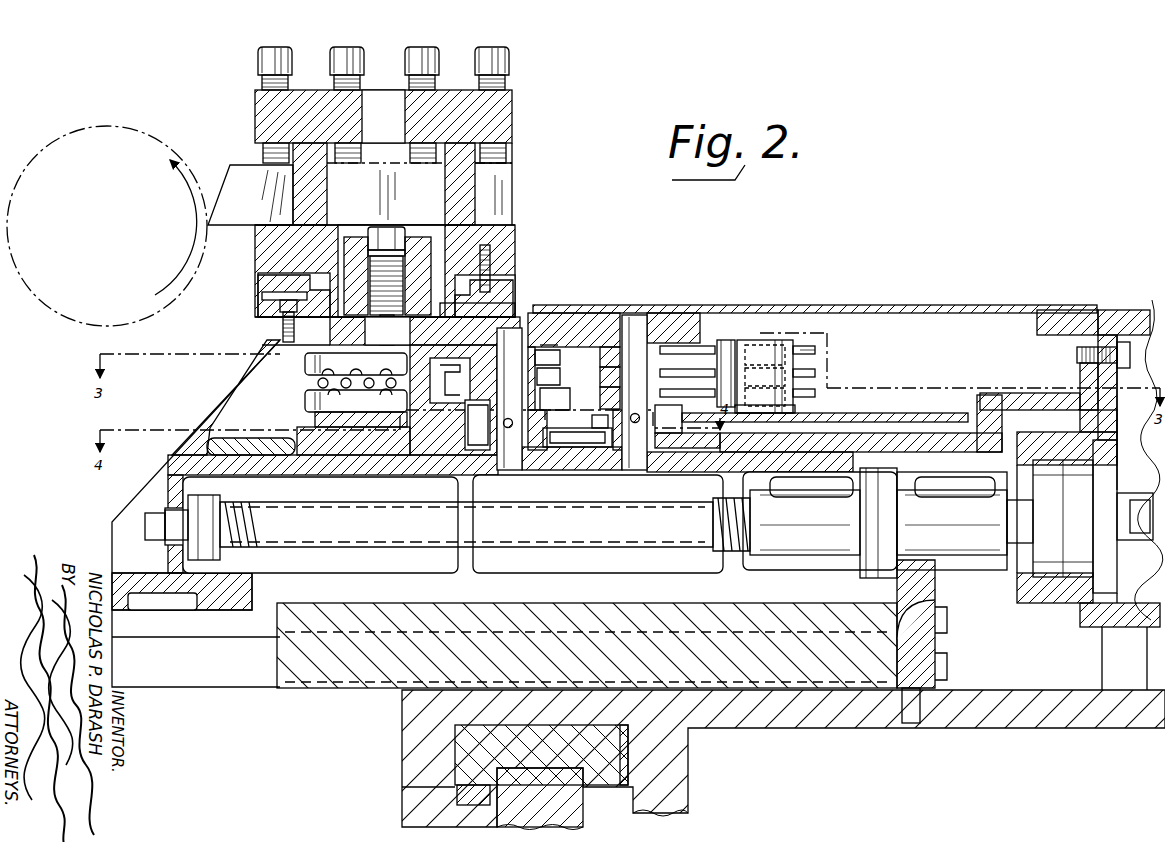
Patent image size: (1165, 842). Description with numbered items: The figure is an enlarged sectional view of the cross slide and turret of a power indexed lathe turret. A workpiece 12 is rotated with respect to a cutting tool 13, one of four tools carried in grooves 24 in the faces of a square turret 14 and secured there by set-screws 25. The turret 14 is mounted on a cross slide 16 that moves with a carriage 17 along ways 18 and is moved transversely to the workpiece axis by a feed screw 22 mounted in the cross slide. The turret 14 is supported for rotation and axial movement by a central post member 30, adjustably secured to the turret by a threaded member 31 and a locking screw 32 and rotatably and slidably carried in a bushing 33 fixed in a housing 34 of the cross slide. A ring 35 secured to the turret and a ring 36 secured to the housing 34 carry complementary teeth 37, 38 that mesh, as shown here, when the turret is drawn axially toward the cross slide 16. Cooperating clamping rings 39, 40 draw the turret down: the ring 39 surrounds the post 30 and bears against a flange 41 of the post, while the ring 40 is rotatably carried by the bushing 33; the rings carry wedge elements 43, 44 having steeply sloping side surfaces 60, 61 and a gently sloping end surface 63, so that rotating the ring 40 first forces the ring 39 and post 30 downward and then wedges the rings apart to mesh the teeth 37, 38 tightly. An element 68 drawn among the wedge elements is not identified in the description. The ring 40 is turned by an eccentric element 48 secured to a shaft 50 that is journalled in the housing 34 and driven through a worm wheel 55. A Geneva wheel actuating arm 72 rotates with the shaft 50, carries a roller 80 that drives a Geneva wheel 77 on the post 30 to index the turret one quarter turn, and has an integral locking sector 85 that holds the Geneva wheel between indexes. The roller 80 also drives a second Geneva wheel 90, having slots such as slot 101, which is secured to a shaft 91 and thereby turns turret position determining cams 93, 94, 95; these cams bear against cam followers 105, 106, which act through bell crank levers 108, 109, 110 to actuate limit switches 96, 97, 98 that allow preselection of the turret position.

The workpiece 12 is at (160, 140).
The cutting tool 13 is at (238, 163).
The turret 14 is at (512, 108).
The cross slide 16 is at (986, 306).
The carriage 17 is at (402, 729).
The ways 18 is at (580, 808).
The feed screw 22 is at (232, 505).
The grooves 24 is at (476, 190).
The set-screws 25 is at (508, 58).
The central post member 30 is at (430, 278).
The threaded member 31 is at (425, 232).
The locking screw 32 is at (377, 233).
The bushing 33 is at (446, 331).
The housing 34 is at (278, 340).
The ring 35 is at (496, 278).
The ring 36 is at (505, 304).
The teeth 37 is at (262, 296).
The teeth 38 is at (505, 286).
The clamping ring 39 is at (305, 400).
The clamping ring 40 is at (305, 366).
The flange 41 is at (315, 418).
The wedge elements 43 is at (316, 386).
The wedge elements 44 is at (327, 365).
The eccentric element 48 is at (550, 358).
The shaft 50 is at (510, 470).
The worm wheel 55 is at (550, 376).
The side surface 60 is at (338, 398).
The side surface 61 is at (383, 378).
The end surface 63 is at (389, 398).
The ball retainer 68 is at (362, 380).
The Geneva wheel actuating arm 72 is at (560, 420).
The Geneva wheel 77 is at (425, 452).
The roller 80 is at (595, 448).
The locking sector 85 is at (460, 452).
The second Geneva wheel 90 is at (680, 440).
The shaft 91 is at (632, 470).
The turret position determining cam 93 is at (600, 358).
The turret position determining cam 94 is at (600, 376).
The turret position determining cam 95 is at (600, 397).
The limit switch 96 is at (800, 348).
The limit switch 97 is at (800, 372).
The limit switch 98 is at (800, 392).
The slot 101 is at (668, 419).
The cam follower 105 is at (724, 340).
The cam follower 106 is at (680, 346).
The bell crank lever 108 is at (748, 346).
The bell crank lever 109 is at (780, 370).
The bell crank lever 110 is at (765, 407).